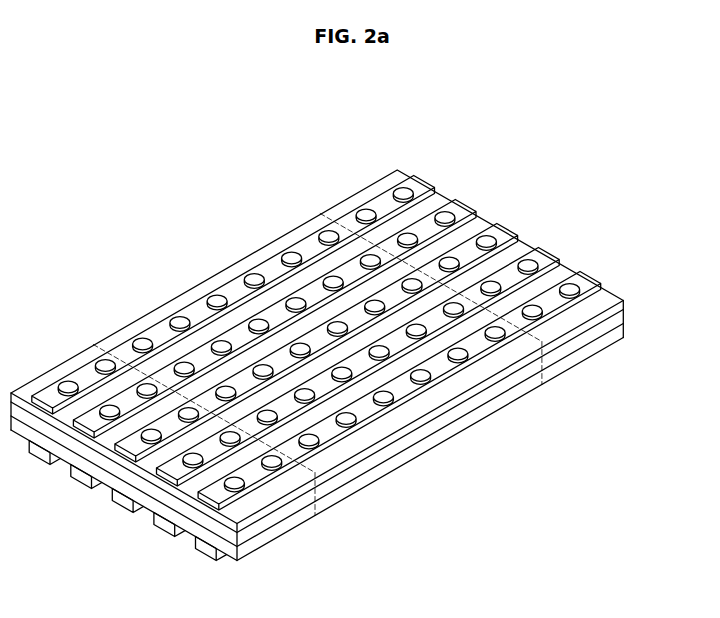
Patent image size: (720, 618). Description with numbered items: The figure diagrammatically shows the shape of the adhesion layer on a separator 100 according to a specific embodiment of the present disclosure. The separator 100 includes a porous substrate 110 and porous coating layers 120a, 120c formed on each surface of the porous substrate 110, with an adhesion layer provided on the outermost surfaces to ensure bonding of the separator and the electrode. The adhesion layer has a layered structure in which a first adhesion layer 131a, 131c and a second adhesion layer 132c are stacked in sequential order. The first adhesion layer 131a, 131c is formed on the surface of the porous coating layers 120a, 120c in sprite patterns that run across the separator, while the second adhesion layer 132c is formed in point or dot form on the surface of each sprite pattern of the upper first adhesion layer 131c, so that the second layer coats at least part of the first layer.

The separator 100 is at (197, 166).
The porous substrate 110 is at (623, 315).
The porous coating layer 120a is at (624, 331).
The porous coating layer 120c is at (622, 300).
The first adhesion layer 131a is at (199, 548).
The first adhesion layer 131c is at (583, 278).
The second adhesion layer 132c is at (567, 284).